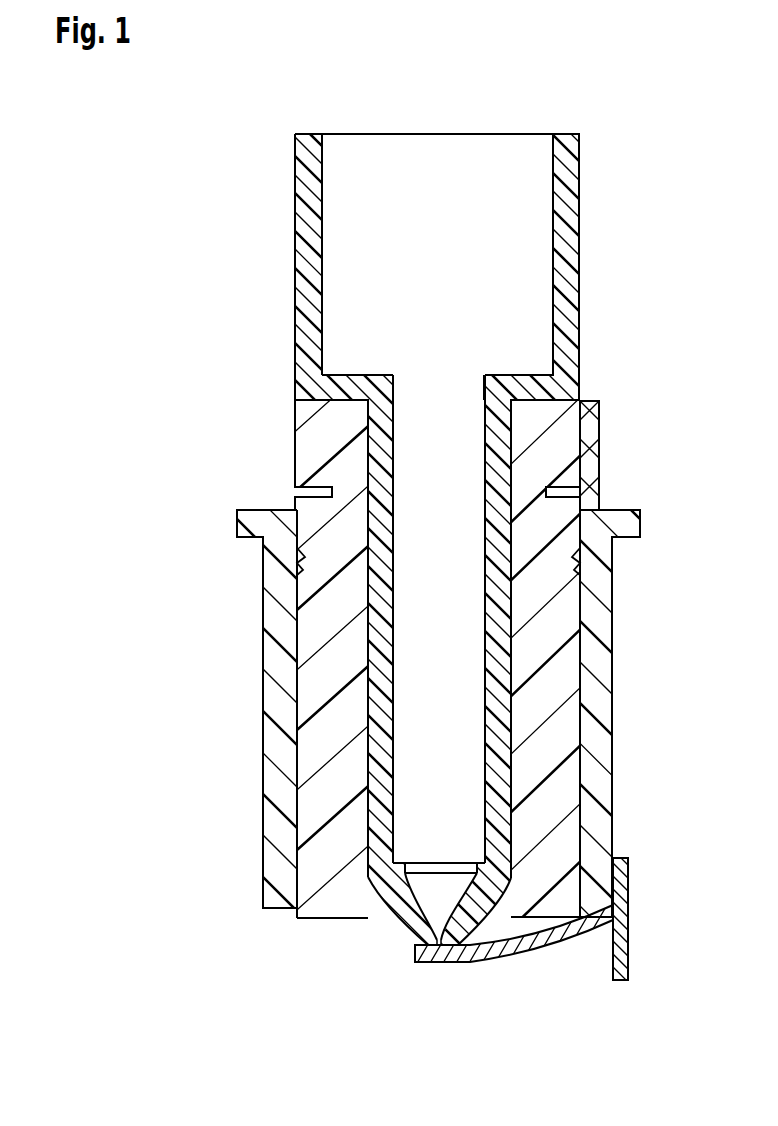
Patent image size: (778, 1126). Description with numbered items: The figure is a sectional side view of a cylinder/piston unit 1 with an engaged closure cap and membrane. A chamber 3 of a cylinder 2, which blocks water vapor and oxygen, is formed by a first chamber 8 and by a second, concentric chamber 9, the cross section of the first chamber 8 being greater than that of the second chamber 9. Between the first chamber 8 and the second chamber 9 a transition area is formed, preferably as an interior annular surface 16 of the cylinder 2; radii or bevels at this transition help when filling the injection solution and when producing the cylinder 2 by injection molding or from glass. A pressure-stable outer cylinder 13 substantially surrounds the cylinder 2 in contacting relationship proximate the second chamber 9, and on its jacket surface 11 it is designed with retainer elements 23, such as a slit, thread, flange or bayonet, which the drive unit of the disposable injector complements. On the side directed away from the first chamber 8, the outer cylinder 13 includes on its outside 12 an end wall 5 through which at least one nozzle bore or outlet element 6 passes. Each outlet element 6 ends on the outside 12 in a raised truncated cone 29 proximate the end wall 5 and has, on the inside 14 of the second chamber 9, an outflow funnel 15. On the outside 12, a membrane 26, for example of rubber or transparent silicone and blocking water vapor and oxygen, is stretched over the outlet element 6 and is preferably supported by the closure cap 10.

The cylinder/piston unit 1 is at (228, 120).
The cylinder 2 is at (313, 325).
The chamber 3 is at (446, 256).
The first chamber 8 is at (403, 285).
The interior annular surface 16 is at (513, 375).
The retainer elements 23 is at (596, 441).
The jacket surface 11 is at (307, 625).
The second chamber 9 is at (427, 668).
The pressure-stable outer cylinder 13 is at (315, 795).
The closure cap 10 is at (598, 745).
The inside 14 is at (473, 848).
The outside 12 is at (343, 918).
The end wall 5 is at (382, 917).
The outlet element 6 is at (438, 943).
The raised truncated cone 29 is at (418, 930).
The outflow funnel 15 is at (478, 950).
The membrane 26 is at (543, 937).